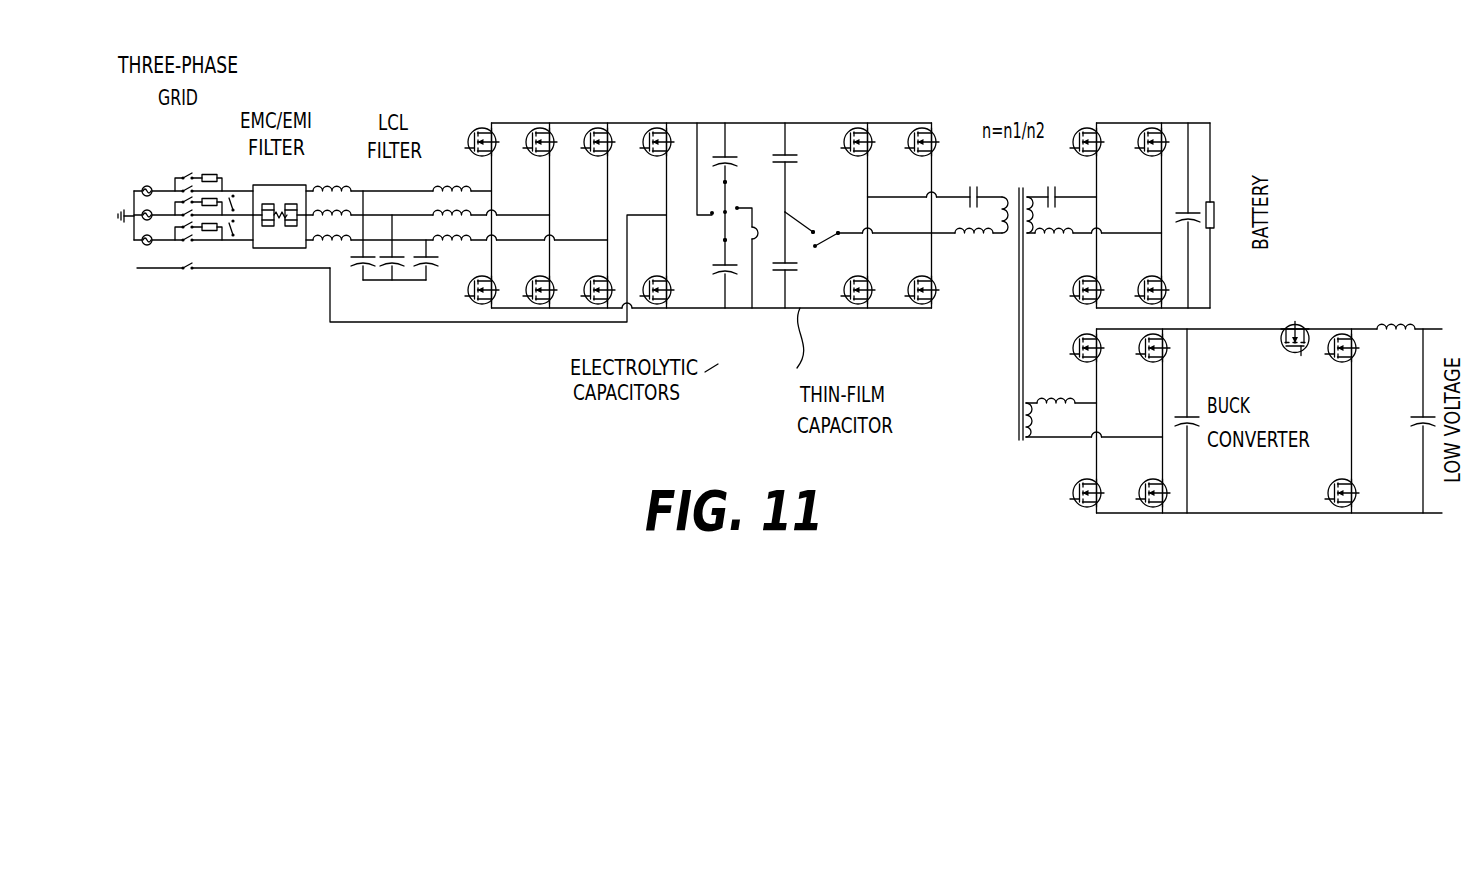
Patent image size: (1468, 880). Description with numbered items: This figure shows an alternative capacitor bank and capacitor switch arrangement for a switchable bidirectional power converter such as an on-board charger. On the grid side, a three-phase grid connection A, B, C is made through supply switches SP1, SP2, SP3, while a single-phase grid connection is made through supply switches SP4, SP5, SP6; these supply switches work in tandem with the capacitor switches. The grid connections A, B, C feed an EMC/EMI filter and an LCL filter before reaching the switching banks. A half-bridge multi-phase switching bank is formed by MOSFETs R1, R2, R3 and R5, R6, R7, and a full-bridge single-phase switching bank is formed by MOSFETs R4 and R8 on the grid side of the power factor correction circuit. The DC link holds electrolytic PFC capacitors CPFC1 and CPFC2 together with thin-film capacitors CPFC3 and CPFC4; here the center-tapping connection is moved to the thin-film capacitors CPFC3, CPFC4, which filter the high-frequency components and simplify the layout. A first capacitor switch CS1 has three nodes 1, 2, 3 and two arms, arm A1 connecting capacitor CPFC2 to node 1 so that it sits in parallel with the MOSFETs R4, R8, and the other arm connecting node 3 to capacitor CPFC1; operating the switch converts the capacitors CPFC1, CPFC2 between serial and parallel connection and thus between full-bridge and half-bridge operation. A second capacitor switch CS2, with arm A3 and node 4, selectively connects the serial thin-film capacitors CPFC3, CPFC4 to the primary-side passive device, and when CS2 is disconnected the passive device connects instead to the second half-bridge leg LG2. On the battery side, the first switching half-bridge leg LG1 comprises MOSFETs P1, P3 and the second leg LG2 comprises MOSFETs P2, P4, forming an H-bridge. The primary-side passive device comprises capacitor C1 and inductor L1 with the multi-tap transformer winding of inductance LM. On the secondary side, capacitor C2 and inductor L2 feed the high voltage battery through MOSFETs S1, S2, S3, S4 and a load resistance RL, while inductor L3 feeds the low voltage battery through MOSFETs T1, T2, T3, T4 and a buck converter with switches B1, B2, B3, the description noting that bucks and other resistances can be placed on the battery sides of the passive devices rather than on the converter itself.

The multi-phase grid connection A is at (145, 187).
The multi-phase grid connection B is at (140, 214).
The multi-phase grid connection C is at (142, 240).
The supply switch SP1 is at (178, 174).
The supply switch SP2 is at (180, 184).
The supply switch SP3 is at (178, 235).
The supply switch SP4 is at (186, 262).
The supply switch SP5 is at (236, 193).
The supply switch SP6 is at (231, 238).
The MOSFET R1 is at (475, 121).
The MOSFET R2 is at (533, 121).
The MOSFET R3 is at (591, 121).
The MOSFET R4 is at (650, 121).
The MOSFET R5 is at (472, 276).
The MOSFET R6 is at (531, 276).
The MOSFET R7 is at (589, 276).
The MOSFET R8 is at (653, 274).
The PFC capacitor CPFC1 is at (742, 152).
The PFC capacitor CPFC2 is at (742, 278).
The thin-film capacitor CPFC3 is at (775, 153).
The thin-film capacitor CPFC4 is at (786, 276).
The first capacitor switch CS1 is at (703, 222).
The second capacitor switch CS2 is at (812, 212).
The node 1 is at (705, 169).
The node 2 is at (719, 195).
The node 3 is at (746, 247).
The node 4 is at (813, 220).
The arm A1 is at (736, 238).
The arm A3 is at (842, 220).
The first switching half-bridge leg LG1 is at (853, 68).
The second switching half-bridge leg LG2 is at (925, 68).
The MOSFET P1 is at (858, 119).
The MOSFET P2 is at (922, 119).
The MOSFET P3 is at (858, 313).
The MOSFET P4 is at (922, 313).
The capacitor C1 is at (981, 175).
The capacitor C2 is at (1062, 175).
The inductor L1 is at (978, 250).
The inductor L2 is at (1094, 250).
The multi-tap winding inductance LM is at (989, 215).
The inductor L3 is at (1094, 402).
The MOSFET S1 is at (1087, 119).
The MOSFET S2 is at (1152, 119).
The MOSFET S3 is at (1087, 271).
The MOSFET S4 is at (1152, 271).
The load resistor RL is at (1223, 215).
The MOSFET T1 is at (1075, 351).
The MOSFET T2 is at (1140, 351).
The MOSFET T3 is at (1075, 484).
The MOSFET T4 is at (1140, 484).
The buck switch B1 is at (1295, 321).
The buck switch B2 is at (1342, 327).
The buck switch B3 is at (1342, 476).